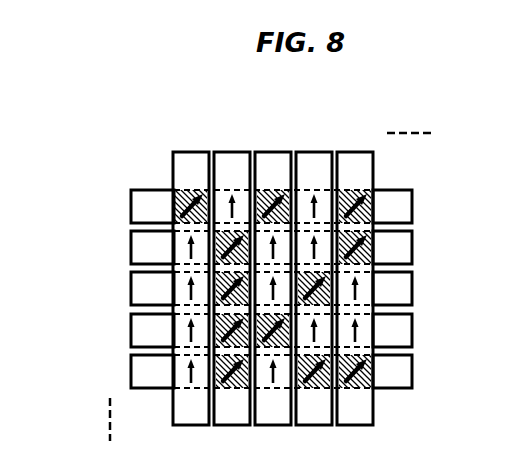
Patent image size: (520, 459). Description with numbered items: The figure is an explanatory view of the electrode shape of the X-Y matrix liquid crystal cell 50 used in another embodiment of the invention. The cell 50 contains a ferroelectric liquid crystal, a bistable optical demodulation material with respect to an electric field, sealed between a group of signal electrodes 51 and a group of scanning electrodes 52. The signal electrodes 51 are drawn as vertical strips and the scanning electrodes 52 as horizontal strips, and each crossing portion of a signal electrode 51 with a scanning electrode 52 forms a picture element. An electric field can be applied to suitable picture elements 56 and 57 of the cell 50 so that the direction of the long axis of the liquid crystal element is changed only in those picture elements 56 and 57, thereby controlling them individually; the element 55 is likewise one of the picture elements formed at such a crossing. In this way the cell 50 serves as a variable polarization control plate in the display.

The X-Y matrix liquid crystal cell 50 is at (511, 216).
The group of signal electrodes 51 is at (428, 111).
The group of scanning electrodes 52 is at (95, 187).
The selected (on) pixel 55 is at (281, 292).
The picture element 56 is at (360, 333).
The picture element 57 is at (357, 376).